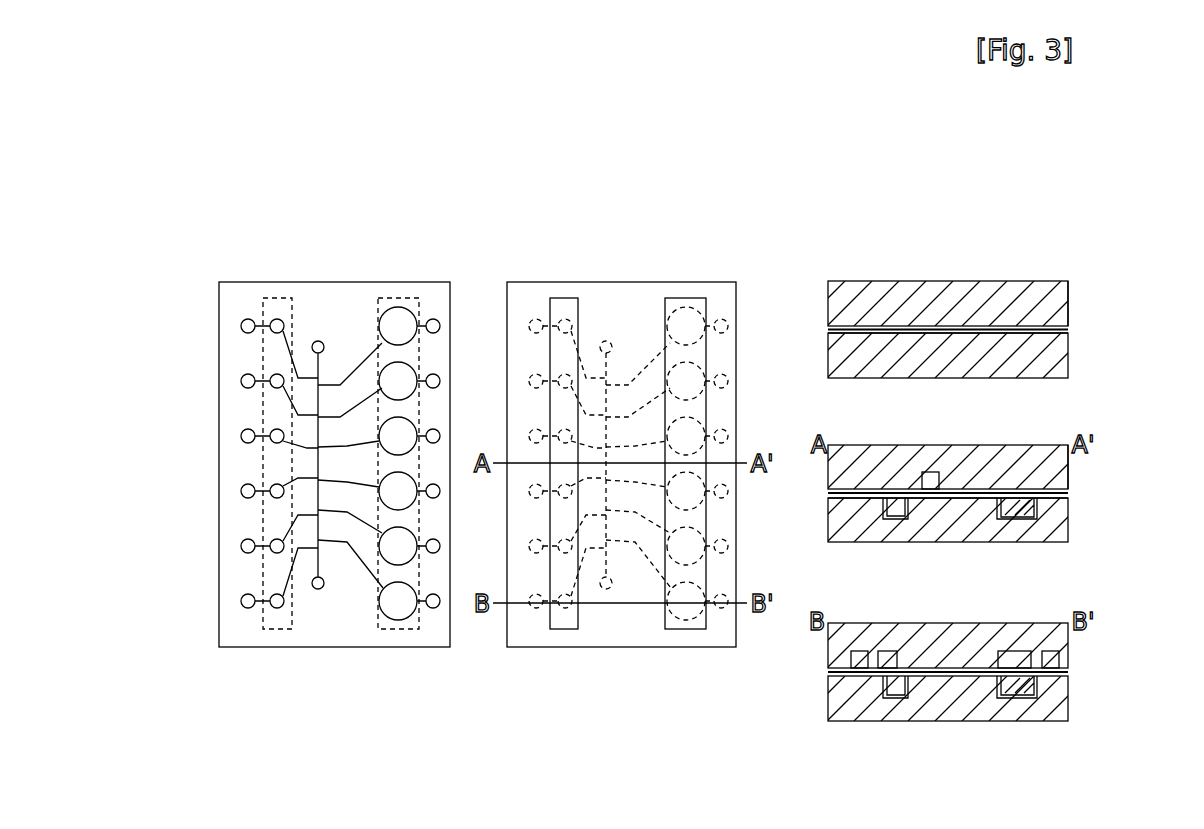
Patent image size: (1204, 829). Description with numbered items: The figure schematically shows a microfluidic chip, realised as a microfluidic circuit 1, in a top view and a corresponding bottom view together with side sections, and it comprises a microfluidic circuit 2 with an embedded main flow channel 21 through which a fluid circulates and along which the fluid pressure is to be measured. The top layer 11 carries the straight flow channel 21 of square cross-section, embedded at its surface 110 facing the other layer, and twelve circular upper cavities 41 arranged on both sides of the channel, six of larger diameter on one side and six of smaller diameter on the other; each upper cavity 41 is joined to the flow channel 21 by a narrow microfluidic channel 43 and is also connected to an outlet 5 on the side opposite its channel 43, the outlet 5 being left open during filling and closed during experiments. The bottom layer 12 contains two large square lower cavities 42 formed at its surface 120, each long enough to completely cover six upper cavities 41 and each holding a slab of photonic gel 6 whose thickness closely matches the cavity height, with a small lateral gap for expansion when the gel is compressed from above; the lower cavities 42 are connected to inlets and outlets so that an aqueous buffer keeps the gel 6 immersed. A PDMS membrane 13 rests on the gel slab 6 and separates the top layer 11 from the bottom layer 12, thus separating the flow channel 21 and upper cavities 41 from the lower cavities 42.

The microfluidic circuit 1 is at (400, 283).
The microfluidic circuit 2 is at (604, 340).
The outlet 5 is at (246, 318).
The photonic gel 6 is at (893, 512).
The top layer 11 is at (848, 315).
The bottom layer 12 is at (848, 367).
The PDMS membrane 13 is at (828, 329).
The flow channel 21 is at (321, 566).
The upper cavity 41 is at (279, 318).
The lower cavity 42 is at (277, 631).
The narrow microfluidic channel 43 is at (305, 450).
The surface of the top layer 110 is at (1068, 310).
The surface of the bottom layer 120 is at (847, 334).